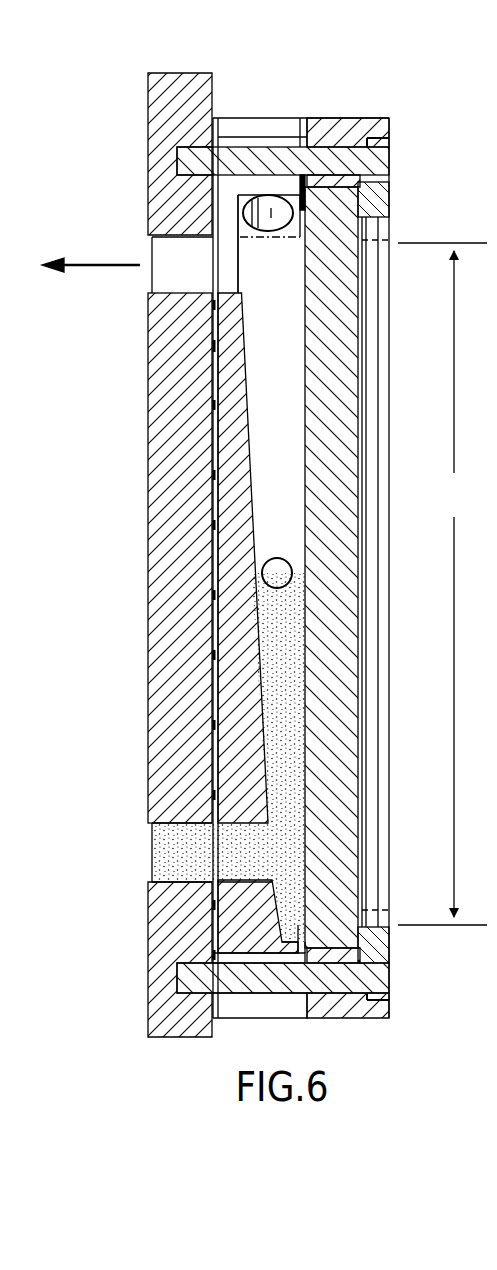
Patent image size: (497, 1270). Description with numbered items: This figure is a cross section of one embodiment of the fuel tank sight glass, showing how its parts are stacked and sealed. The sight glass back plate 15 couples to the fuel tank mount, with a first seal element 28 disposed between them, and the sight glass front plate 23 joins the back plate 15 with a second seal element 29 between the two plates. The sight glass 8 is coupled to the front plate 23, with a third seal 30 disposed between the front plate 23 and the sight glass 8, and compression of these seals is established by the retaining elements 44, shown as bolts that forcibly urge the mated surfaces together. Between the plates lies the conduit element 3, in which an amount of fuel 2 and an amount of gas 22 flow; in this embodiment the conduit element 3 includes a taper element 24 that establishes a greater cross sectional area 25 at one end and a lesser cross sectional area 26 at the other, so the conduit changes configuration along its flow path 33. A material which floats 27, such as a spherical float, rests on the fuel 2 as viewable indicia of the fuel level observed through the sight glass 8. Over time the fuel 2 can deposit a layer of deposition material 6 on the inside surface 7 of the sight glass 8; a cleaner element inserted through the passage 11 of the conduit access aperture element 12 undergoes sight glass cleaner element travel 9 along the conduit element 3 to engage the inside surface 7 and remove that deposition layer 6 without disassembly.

The conduit element 3 is at (245, 480).
The taper element 24 is at (235, 783).
The amount of fuel 2 is at (267, 620).
The greater cross sectional area 25 is at (257, 279).
The passage 11 is at (275, 210).
The conduit access aperture element 12 is at (255, 212).
The material which floats 27 is at (292, 570).
The flow path 33 is at (288, 692).
The lesser cross sectional area 26 is at (273, 859).
The deposition material layer 6 is at (332, 440).
The inside surface 7 is at (358, 258).
The sight glass 8 is at (342, 228).
The third seal 30 is at (362, 200).
The second seal element 29 is at (318, 130).
The sight glass front plate 23 is at (343, 118).
The retaining elements 44 is at (350, 155).
The sight glass back plate 15 is at (245, 118).
The first seal element 28 is at (213, 125).
The amount of gas 22 is at (100, 265).
The sight glass cleaner element travel 9 is at (442, 584).